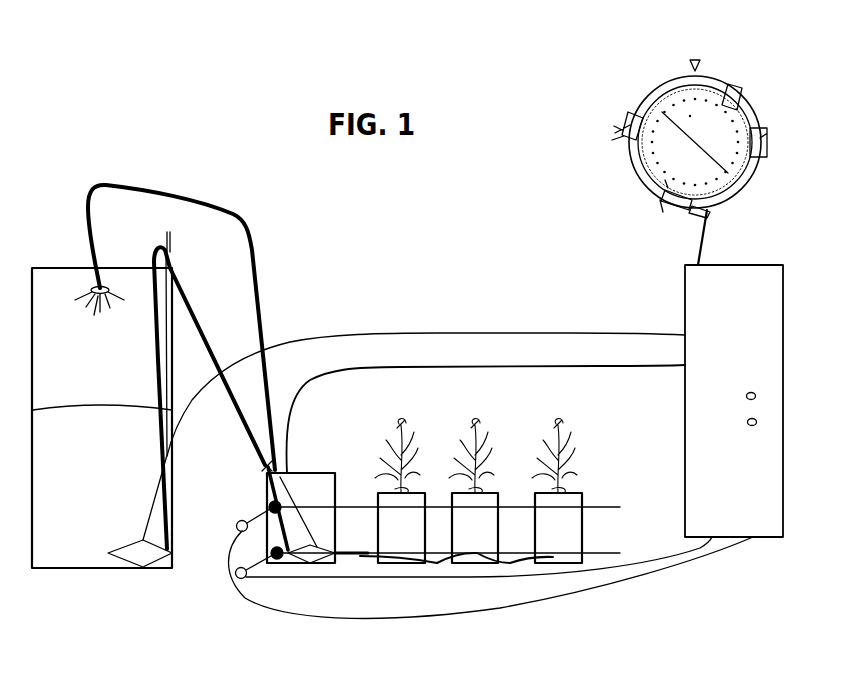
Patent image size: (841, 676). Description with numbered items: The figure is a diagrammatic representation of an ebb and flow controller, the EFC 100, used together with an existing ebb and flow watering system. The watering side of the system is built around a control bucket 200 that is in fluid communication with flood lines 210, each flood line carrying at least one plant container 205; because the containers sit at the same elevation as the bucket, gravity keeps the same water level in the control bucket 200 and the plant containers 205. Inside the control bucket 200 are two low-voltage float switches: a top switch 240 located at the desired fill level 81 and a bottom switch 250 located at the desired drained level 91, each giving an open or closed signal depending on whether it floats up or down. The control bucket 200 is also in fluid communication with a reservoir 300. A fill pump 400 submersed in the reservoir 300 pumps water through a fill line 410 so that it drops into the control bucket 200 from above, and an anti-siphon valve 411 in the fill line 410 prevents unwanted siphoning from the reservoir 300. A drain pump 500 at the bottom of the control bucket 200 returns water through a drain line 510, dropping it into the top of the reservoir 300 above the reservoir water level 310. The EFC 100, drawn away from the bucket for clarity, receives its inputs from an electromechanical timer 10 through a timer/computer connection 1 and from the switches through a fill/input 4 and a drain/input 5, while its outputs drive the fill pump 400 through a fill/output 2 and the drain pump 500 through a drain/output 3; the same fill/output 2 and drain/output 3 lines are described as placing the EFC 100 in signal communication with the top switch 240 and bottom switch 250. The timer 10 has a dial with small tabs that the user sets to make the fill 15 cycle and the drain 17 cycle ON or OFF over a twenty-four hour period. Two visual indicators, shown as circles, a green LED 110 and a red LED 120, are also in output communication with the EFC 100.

The timer/computer connection 1 is at (719, 206).
The fill/output 2 is at (426, 394).
The drain/output 3 is at (485, 413).
The fill/input 4 is at (342, 617).
The drain/input 5 is at (310, 577).
The timer 10 is at (629, 96).
The fill cycle 15 is at (728, 110).
The drain cycle 17 is at (753, 133).
The fill level 81 is at (461, 501).
The drained level 91 is at (462, 546).
The EFC 100 is at (734, 373).
The green LED 110 is at (755, 380).
The red LED 120 is at (751, 436).
The control bucket 200 is at (299, 500).
The plant container 205 is at (471, 491).
The flood line 210 is at (354, 565).
The top switch 240 is at (241, 520).
The bottom switch 250 is at (236, 571).
The reservoir 300 is at (102, 403).
The reservoir water level 310 is at (102, 419).
The fill pump 400 is at (137, 552).
The fill line 410 is at (148, 263).
The anti-siphon valve 411 is at (166, 247).
The drain pump 500 is at (317, 553).
The drain line 510 is at (260, 303).